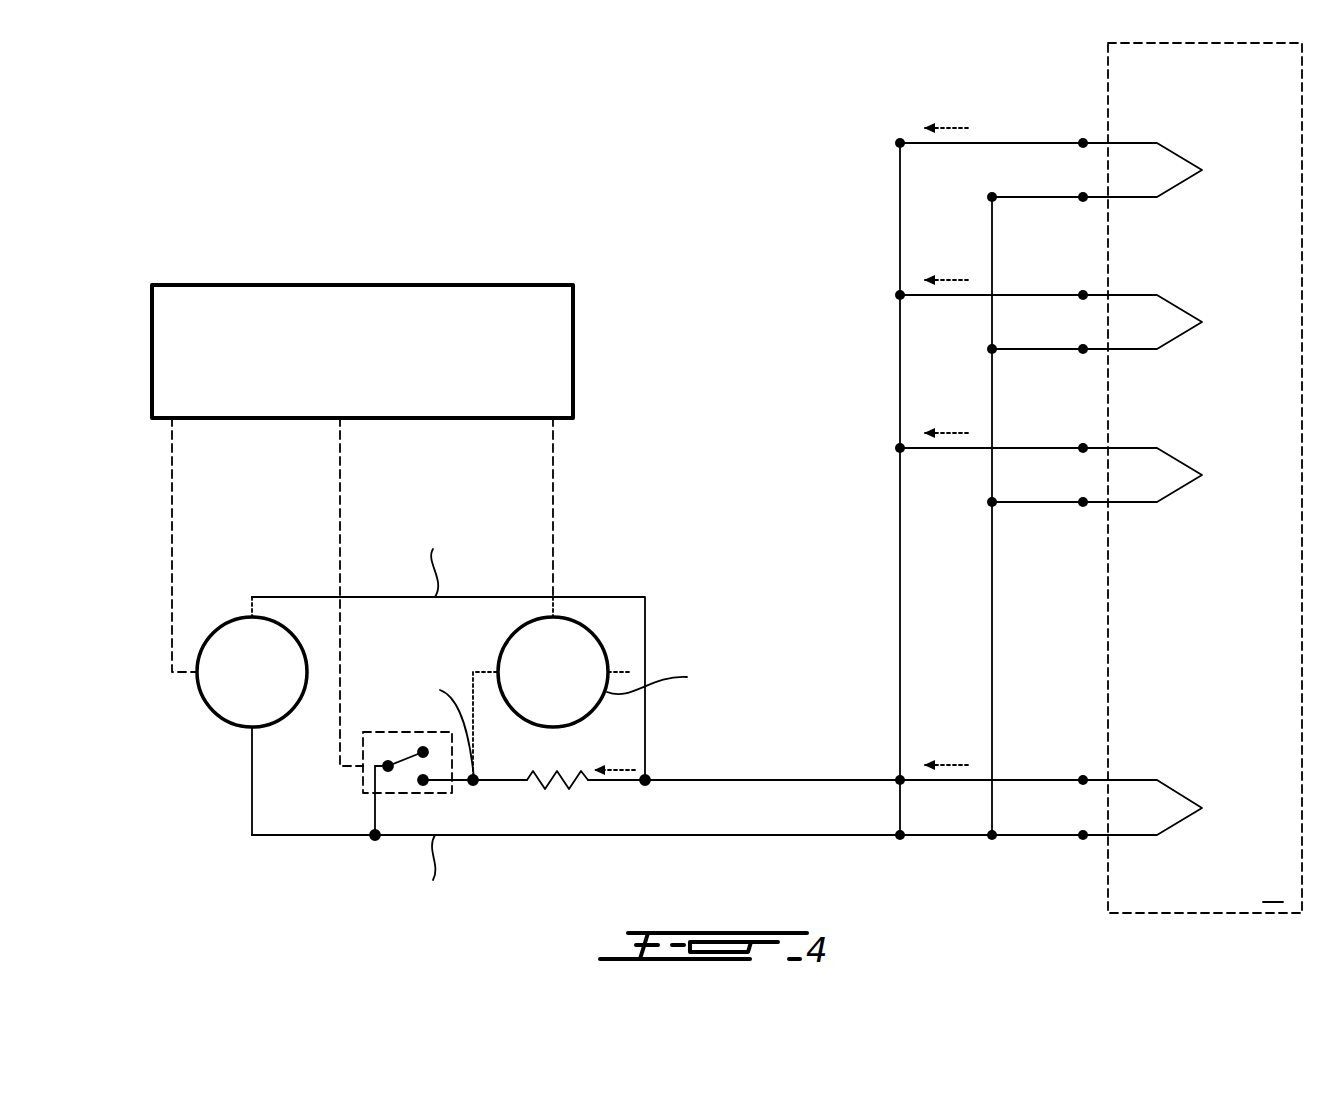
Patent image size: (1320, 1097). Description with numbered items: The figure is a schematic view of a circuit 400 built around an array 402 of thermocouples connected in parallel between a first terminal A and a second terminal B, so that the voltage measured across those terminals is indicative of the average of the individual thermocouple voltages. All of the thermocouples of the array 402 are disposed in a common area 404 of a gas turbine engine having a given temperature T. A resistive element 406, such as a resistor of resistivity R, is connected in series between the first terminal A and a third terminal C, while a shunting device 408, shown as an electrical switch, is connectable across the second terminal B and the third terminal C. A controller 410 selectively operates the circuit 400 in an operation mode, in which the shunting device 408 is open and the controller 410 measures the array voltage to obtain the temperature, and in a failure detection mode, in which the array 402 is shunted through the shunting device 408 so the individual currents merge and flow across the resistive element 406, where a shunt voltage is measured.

The circuit 400 is at (240, 165).
The array of thermocouples 402 is at (856, 236).
The common area 404 is at (1203, 913).
The resistive element 406 is at (570, 790).
The shunting device 408 is at (356, 778).
The controller 410 is at (500, 285).